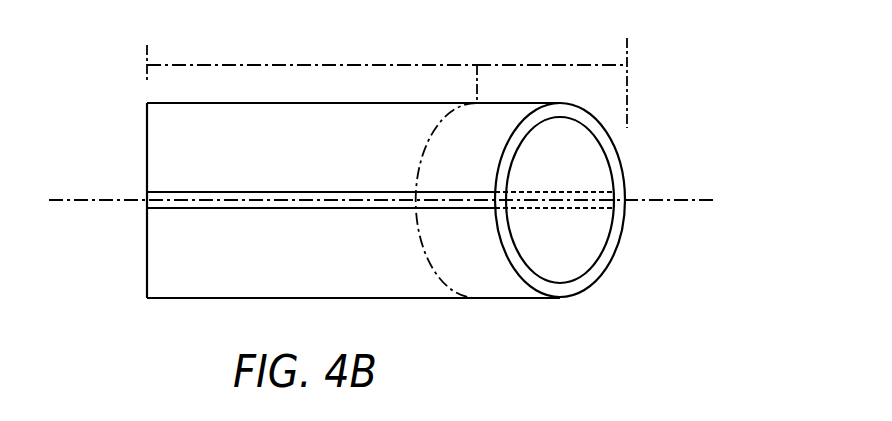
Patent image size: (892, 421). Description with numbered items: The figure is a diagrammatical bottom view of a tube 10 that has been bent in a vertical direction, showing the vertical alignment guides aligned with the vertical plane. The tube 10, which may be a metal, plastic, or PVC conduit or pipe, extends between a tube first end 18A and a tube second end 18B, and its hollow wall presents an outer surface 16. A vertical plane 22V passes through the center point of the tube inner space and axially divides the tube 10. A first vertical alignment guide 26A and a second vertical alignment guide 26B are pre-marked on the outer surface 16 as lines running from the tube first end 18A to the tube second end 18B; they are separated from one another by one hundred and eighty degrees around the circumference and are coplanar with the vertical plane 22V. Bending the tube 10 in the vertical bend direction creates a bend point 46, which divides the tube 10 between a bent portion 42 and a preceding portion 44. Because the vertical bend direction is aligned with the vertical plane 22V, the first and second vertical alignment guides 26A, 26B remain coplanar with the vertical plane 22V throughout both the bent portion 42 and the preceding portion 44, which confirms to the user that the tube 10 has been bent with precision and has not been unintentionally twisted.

The tube 10 is at (161, 326).
The outer surface 16 is at (243, 299).
The tube first end 18A is at (147, 255).
The tube second end 18B is at (592, 268).
The vertical plane 22V is at (685, 200).
The first vertical alignment guide 26A is at (587, 200).
The second vertical alignment guide 26B is at (165, 200).
The bent portion 42 is at (510, 65).
The preceding portion 44 is at (240, 65).
The bend point 46 is at (466, 94).